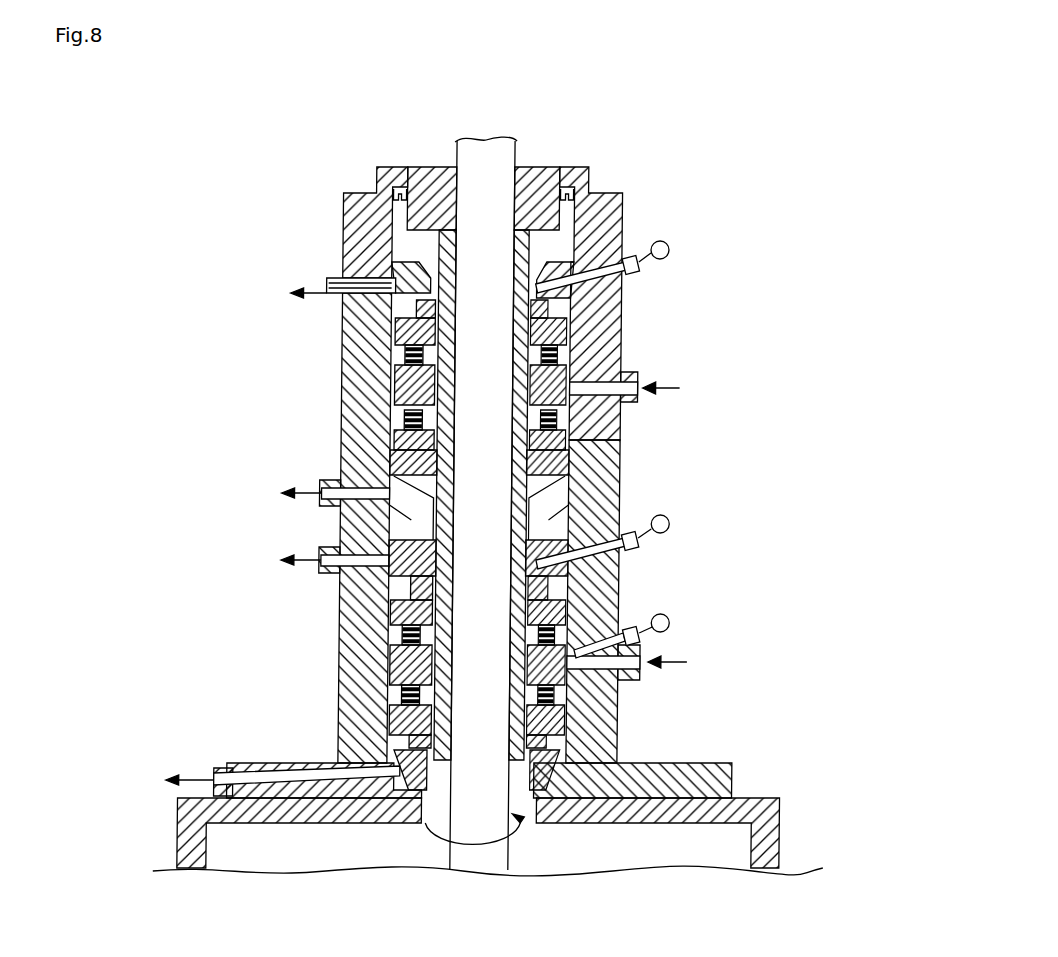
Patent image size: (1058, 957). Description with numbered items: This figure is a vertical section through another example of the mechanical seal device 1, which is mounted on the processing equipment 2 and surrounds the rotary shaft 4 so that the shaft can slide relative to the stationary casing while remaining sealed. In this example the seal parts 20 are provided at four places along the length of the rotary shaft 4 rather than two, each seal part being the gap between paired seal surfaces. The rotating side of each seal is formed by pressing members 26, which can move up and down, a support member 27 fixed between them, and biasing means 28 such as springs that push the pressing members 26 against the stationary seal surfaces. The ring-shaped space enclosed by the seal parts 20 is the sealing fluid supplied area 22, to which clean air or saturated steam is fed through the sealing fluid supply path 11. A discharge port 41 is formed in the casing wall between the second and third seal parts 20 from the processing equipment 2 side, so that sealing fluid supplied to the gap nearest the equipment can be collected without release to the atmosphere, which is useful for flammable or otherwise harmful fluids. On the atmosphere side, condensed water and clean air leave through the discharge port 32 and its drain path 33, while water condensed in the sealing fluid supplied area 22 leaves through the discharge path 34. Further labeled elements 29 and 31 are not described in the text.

The mechanical seal device 1 is at (706, 189).
The processing equipment 2 is at (754, 799).
The rotary shaft 4 is at (519, 153).
The sealing fluid supply path 11 is at (648, 676).
The seal parts 20 is at (585, 290).
The sealing fluid supplied area 22 is at (392, 470).
The pressing members 26 is at (396, 330).
The support member 27 is at (396, 390).
The biasing means 28 is at (570, 356).
The housing 29 is at (623, 207).
The lip seal 31 is at (405, 187).
The discharge port 32 is at (398, 268).
The drain path 33 is at (342, 295).
The discharge path 34 is at (330, 487).
The discharge port 41 is at (410, 528).